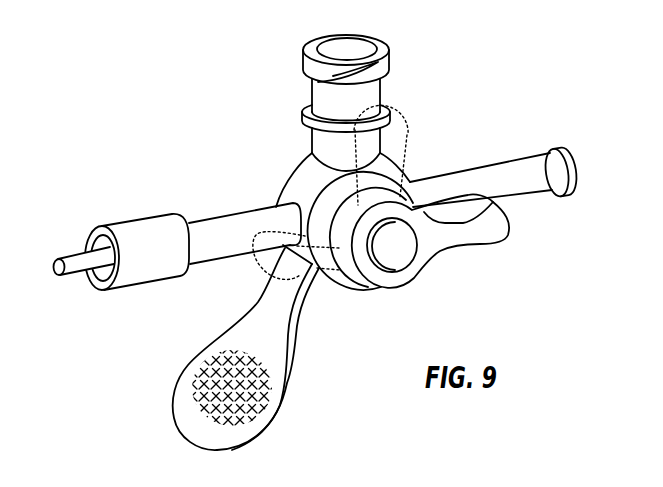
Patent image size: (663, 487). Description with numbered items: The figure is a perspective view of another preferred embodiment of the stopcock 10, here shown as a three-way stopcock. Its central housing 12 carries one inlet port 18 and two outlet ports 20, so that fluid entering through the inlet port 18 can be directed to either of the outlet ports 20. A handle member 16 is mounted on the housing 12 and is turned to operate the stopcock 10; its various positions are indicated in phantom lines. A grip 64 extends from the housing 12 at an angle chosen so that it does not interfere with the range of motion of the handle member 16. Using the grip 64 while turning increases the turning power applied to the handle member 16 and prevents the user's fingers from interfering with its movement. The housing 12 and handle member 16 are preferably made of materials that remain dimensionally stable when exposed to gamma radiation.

The stopcock 10 is at (207, 105).
The housing 12 is at (395, 159).
The handle member 16 is at (495, 231).
The inlet port 18 is at (72, 253).
The outlet port 20 is at (378, 62).
The grip 64 is at (192, 372).